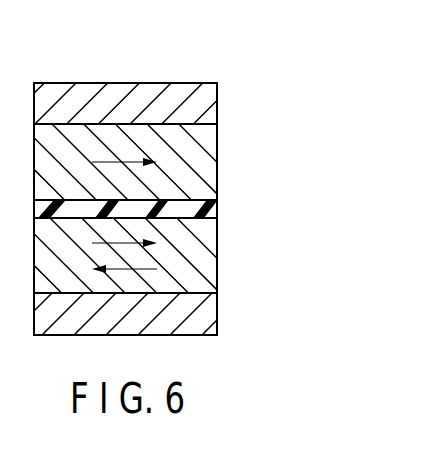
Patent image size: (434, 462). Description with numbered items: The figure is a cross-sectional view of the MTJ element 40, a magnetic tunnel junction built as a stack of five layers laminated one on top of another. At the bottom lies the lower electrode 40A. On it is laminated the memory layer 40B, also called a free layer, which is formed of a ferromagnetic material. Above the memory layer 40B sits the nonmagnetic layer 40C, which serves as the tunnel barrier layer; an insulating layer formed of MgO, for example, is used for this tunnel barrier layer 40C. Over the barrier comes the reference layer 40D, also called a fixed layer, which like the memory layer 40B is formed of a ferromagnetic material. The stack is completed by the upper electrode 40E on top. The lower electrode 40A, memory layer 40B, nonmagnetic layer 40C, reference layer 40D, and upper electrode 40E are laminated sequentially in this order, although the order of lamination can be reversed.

The MTJ element 40 is at (136, 62).
The lower electrode 40A is at (218, 311).
The memory layer 40B is at (218, 254).
The nonmagnetic layer 40C is at (218, 209).
The reference layer 40D is at (218, 155).
The upper electrode 40E is at (218, 106).